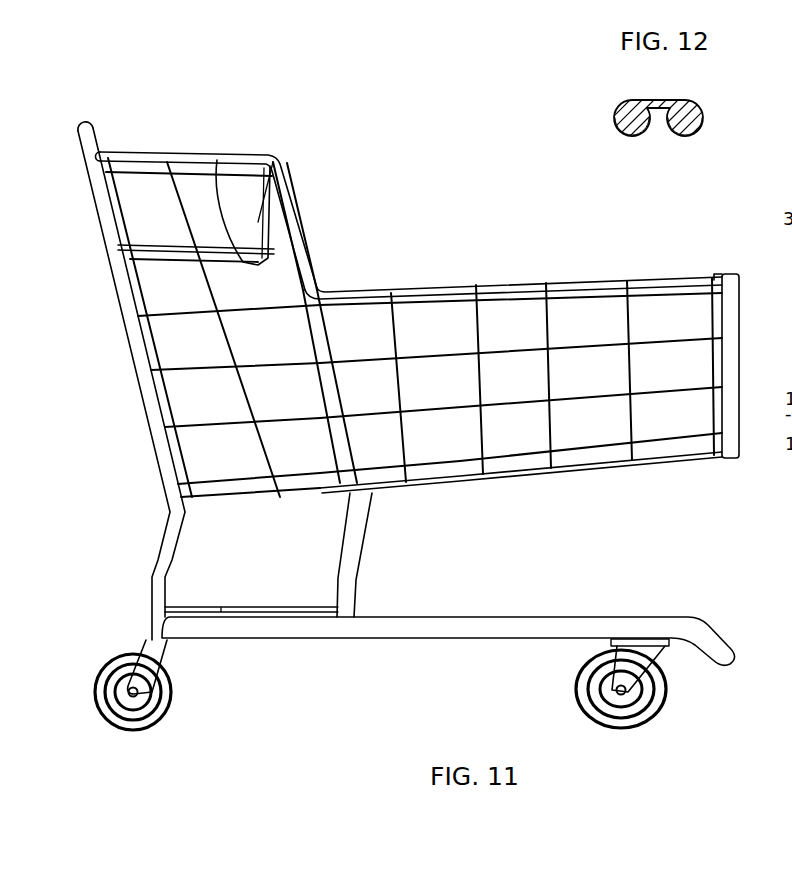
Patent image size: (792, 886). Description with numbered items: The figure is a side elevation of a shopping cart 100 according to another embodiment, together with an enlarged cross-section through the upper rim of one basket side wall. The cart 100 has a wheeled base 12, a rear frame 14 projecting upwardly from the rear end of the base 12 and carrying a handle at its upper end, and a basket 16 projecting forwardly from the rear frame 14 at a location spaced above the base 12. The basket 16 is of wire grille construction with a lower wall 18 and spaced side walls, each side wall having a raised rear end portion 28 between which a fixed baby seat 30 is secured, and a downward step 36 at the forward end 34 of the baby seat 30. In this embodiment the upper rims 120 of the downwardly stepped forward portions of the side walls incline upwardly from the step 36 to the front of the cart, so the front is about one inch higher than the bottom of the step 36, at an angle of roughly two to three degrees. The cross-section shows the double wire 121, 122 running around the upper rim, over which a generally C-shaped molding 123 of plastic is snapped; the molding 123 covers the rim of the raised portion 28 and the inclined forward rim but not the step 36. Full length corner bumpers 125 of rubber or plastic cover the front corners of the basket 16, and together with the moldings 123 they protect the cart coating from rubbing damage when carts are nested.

In FIG. 11, the shopping cart 100 is at (440, 208).
In FIG. 11, the wheeled base 12 is at (466, 616).
In FIG. 11, the rear frame 14 is at (140, 388).
In FIG. 11, the basket 16 is at (533, 310).
In FIG. 11, the lower wall 18 is at (580, 465).
In FIG. 11, the raised rear end portion 28 is at (277, 241).
In FIG. 11, the baby seat 30 is at (217, 160).
In FIG. 11, the forward end of the baby seat 34 is at (263, 222).
In FIG. 11, the downward step 36 is at (310, 264).
In FIG. 11, the upper rim 120 is at (622, 275).
In FIG. 12, the double wire (first wire) 121 is at (638, 134).
In FIG. 12, the double wire (second wire) 122 is at (675, 134).
In FIG. 11, the C-shaped molding 123 is at (155, 153).
In FIG. 12, the C-shaped molding 123 is at (672, 100).
In FIG. 11, the corner bumper 125 is at (739, 374).